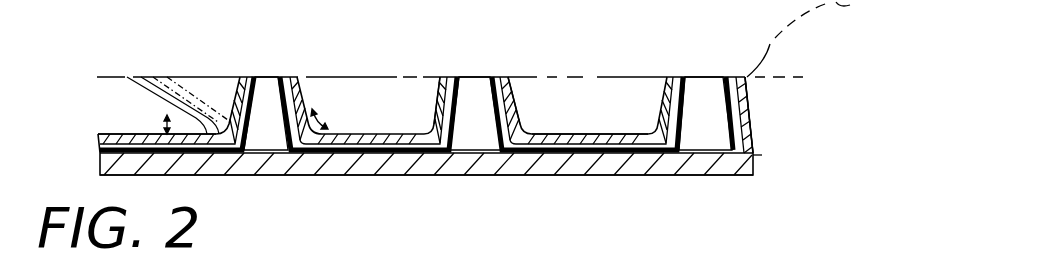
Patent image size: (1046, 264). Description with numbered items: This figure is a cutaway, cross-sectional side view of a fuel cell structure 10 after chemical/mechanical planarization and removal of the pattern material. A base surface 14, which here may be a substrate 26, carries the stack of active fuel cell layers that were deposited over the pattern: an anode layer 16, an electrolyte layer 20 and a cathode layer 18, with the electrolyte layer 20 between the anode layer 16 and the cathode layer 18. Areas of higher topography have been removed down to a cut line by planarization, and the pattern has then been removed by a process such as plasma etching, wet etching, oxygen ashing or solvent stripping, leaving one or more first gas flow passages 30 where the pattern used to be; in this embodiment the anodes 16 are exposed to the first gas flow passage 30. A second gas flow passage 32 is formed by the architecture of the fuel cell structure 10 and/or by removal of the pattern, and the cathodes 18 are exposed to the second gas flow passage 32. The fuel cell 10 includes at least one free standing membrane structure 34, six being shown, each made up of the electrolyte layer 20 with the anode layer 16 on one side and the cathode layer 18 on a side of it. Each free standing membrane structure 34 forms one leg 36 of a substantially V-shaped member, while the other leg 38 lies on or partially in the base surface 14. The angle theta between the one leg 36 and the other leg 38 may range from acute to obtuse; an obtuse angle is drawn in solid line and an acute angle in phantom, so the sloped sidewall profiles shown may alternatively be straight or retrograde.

The fuel cell structure 10 is at (810, 182).
The base surface 14 is at (497, 158).
The substrate 26 is at (497, 158).
The anode layer 16 is at (280, 77).
The cathode layer 18 is at (240, 77).
The electrolyte layer 20 is at (250, 77).
The first gas flow passage 30 is at (265, 153).
The second gas flow passage 32 is at (603, 127).
The free standing membrane structure 34 is at (430, 110).
The one leg 36 is at (518, 110).
The other leg 38 is at (93, 143).